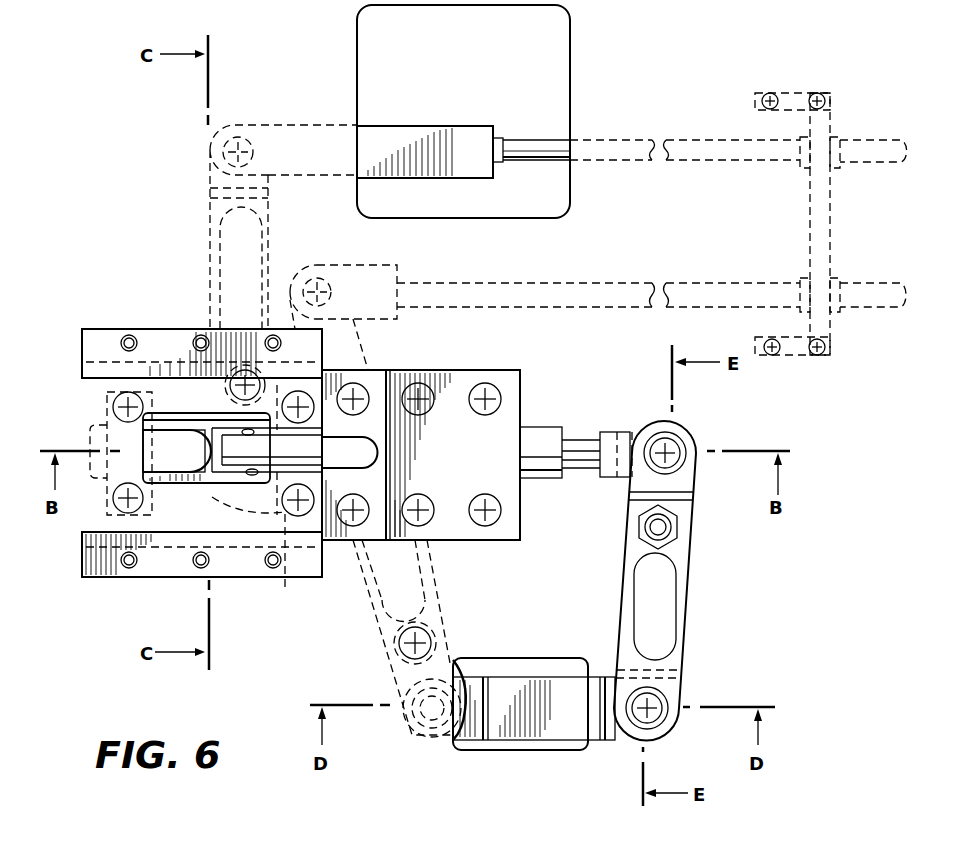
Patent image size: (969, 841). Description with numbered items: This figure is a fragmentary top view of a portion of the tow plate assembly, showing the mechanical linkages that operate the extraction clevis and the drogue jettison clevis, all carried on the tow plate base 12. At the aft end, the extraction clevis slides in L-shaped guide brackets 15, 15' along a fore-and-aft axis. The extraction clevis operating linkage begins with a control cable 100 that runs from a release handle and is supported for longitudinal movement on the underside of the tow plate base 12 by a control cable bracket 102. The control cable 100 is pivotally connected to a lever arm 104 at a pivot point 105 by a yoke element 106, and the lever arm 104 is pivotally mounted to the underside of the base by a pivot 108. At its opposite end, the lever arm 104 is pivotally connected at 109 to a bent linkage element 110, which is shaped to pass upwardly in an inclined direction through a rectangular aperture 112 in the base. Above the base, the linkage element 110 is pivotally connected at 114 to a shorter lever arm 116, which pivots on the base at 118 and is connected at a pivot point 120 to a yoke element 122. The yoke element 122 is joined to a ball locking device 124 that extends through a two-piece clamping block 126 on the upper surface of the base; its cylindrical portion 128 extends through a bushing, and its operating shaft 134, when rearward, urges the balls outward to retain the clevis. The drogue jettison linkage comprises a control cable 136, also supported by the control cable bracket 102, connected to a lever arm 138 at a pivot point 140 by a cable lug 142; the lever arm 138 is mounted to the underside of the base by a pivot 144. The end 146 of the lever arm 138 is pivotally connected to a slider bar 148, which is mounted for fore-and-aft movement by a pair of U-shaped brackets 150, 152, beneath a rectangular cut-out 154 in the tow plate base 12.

The tow plate base 12 is at (584, 372).
The L-shaped guide bracket 15 is at (202, 339).
The L-shaped guide bracket 15' is at (202, 571).
The control cable 100 is at (623, 283).
The control cable bracket 102 is at (833, 251).
The lever arm 104 is at (411, 591).
The pivot point 105 is at (320, 285).
The yoke element 106 is at (382, 282).
The pivot 108 is at (432, 646).
The pivot connection 109 is at (412, 726).
The bent linkage element 110 is at (544, 712).
The rectangular aperture 112 is at (552, 672).
The pivot connection 114 is at (660, 705).
The lever arm 116 is at (655, 645).
The pivot 118 is at (672, 527).
The pivot point 120 is at (672, 445).
The yoke element 122 is at (622, 432).
The ball locking device 124 is at (540, 495).
The two-piece clamping block 126 is at (458, 385).
The cylindrical portion 128 is at (295, 447).
The operating shaft 134 is at (578, 438).
The control cable 136 is at (648, 140).
The lever arm 138 is at (215, 250).
The pivot point 140 is at (224, 152).
The cable lug 142 is at (312, 127).
The pivot 144 is at (229, 385).
The end of lever arm 146 is at (213, 497).
The slider bar 148 is at (90, 425).
The U-shaped bracket 150 is at (118, 514).
The U-shaped bracket 152 is at (285, 582).
The rectangular cut-out 154 is at (190, 444).